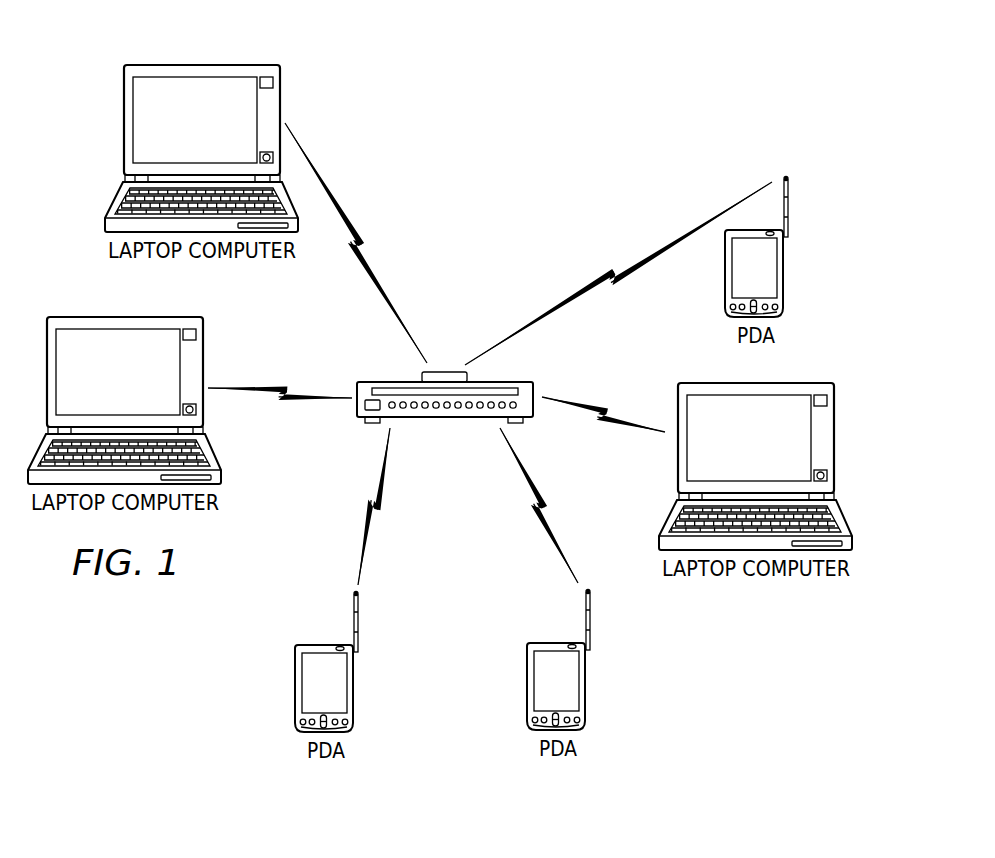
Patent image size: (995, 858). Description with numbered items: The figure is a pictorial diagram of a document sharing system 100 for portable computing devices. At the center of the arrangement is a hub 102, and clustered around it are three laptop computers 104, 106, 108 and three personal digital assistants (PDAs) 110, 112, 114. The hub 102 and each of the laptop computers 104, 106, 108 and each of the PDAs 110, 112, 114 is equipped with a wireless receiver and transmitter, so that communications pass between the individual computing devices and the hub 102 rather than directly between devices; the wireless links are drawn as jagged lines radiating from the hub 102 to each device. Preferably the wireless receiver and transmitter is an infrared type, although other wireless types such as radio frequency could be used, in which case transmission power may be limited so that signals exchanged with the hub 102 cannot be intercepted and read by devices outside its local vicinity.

The document sharing system 100 is at (601, 133).
The hub 102 is at (374, 381).
The laptop computer 104 is at (770, 453).
The laptop computer 106 is at (140, 387).
The laptop computer 108 is at (215, 137).
The personal digital assistant 110 is at (587, 686).
The personal digital assistant 112 is at (355, 686).
The personal digital assistant 114 is at (783, 271).